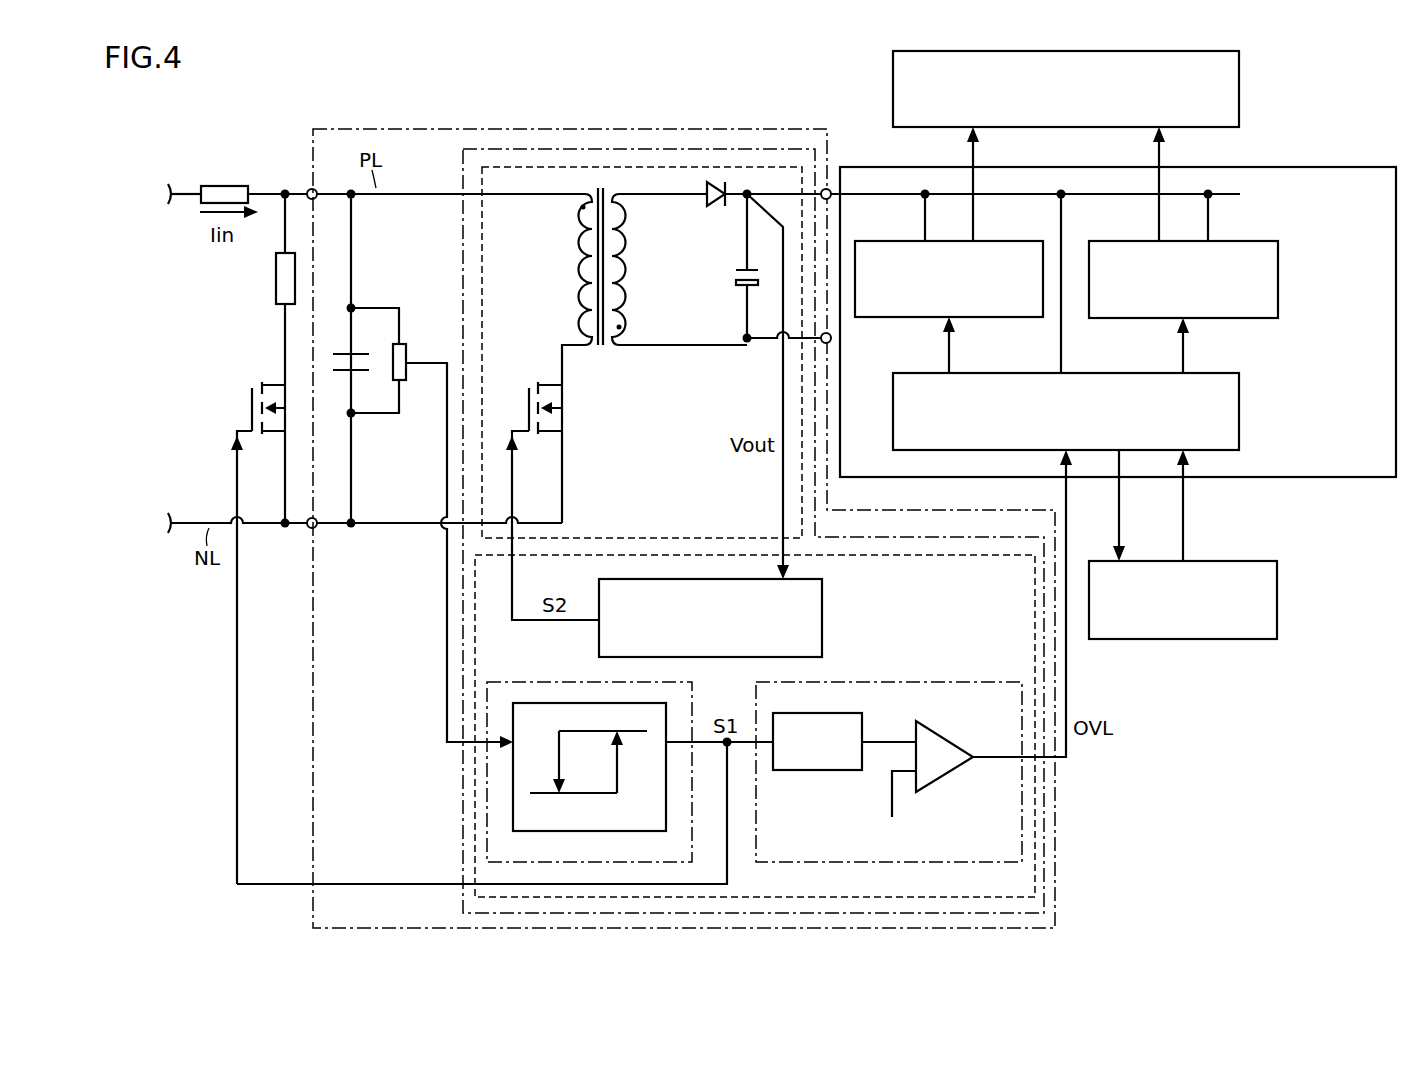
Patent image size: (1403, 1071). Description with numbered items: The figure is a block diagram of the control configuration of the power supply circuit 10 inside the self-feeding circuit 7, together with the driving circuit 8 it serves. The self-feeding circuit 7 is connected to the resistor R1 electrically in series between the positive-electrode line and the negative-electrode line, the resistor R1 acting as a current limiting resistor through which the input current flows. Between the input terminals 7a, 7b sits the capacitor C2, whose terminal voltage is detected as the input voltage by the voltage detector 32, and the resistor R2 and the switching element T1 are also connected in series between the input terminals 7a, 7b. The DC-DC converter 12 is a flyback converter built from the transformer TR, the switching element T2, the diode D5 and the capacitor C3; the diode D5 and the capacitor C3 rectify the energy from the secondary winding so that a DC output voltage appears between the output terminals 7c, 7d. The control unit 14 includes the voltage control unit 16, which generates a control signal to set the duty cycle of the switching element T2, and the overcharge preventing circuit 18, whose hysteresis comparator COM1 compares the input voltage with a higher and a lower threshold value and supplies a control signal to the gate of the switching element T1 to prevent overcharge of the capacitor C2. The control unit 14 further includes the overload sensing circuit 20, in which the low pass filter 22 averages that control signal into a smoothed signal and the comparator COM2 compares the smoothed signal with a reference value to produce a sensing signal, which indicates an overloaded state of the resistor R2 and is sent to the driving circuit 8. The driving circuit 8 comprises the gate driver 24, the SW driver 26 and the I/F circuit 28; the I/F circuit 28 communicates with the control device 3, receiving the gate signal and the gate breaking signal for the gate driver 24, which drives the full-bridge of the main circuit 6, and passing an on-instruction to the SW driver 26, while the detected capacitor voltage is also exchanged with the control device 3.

The control device 3 is at (1246, 640).
The main circuit 6 is at (1242, 89).
The self-feeding circuit 7 is at (762, 128).
The input terminal 7a is at (310, 190).
The input terminal 7b is at (308, 529).
The output terminal 7c is at (828, 188).
The output terminal 7d is at (829, 343).
The driving circuit 8 is at (1113, 302).
The power supply circuit 10 is at (463, 798).
The DC-DC converter 12 is at (482, 186).
The control unit 14 is at (475, 857).
The voltage control unit 16 is at (822, 620).
The overcharge preventing circuit 18 is at (589, 758).
The overload sensing circuit 20 is at (889, 757).
The low pass filter 22 is at (814, 770).
The gate driver 24 is at (1004, 241).
The SW driver 26 is at (1239, 241).
The I/F circuit 28 is at (1242, 411).
The voltage detector 32 is at (402, 385).
The resistor R1 is at (225, 186).
The resistor R2 is at (276, 278).
The capacitor C2 is at (346, 382).
The capacitor C3 is at (750, 288).
The diode D5 is at (720, 208).
The switching element T1 is at (250, 398).
The switching element T2 is at (527, 400).
The transformer TR is at (600, 363).
The comparator COM1 is at (594, 831).
The comparator COM2 is at (939, 784).